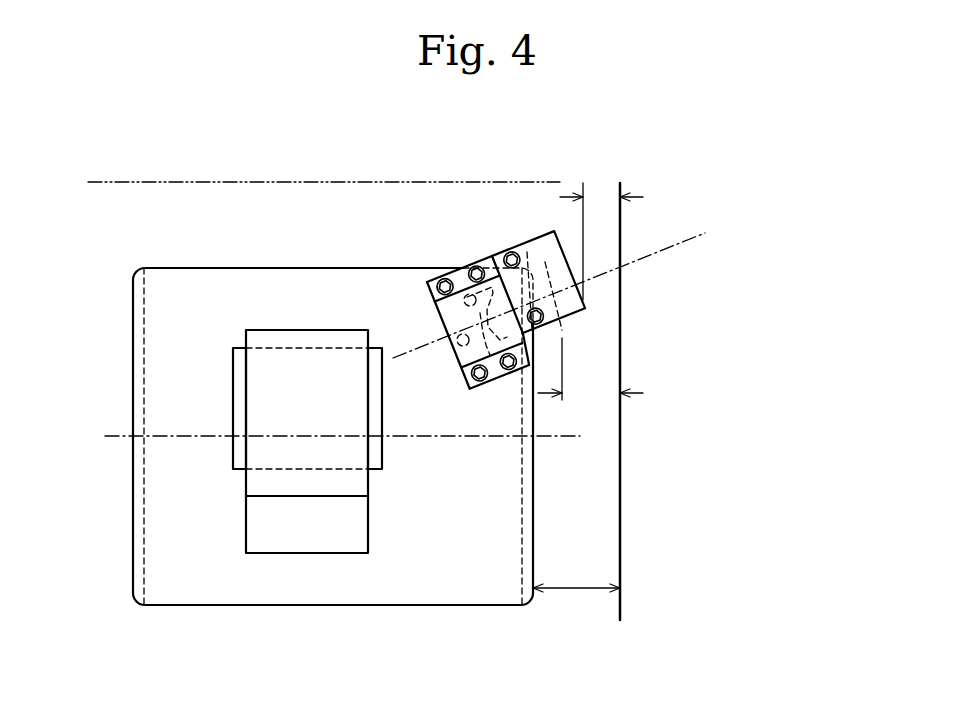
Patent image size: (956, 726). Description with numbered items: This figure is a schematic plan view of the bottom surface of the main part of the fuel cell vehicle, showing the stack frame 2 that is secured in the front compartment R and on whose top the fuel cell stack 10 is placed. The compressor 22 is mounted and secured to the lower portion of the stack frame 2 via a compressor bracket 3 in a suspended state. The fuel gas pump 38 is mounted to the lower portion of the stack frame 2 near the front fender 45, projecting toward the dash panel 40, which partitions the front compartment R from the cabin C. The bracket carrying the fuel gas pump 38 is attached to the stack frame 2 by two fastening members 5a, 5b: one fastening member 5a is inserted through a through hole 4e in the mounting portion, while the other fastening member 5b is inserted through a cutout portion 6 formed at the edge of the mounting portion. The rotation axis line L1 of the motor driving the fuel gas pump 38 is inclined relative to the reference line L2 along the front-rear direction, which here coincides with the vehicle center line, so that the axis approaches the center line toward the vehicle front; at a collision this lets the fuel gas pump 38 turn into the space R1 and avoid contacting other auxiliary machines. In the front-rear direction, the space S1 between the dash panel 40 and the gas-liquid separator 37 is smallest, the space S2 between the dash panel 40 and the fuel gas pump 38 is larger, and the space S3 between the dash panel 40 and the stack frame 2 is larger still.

The stack frame 2 is at (252, 293).
The compressor bracket 3 is at (236, 448).
The through hole 4e is at (463, 346).
The fastening member 5a is at (460, 357).
The fastening member 5b is at (455, 298).
The cutout portion 6 is at (487, 322).
The fuel cell stack 10 is at (147, 313).
The compressor 22 is at (325, 538).
The gas-liquid separator 37 is at (537, 241).
The fuel gas pump 38 is at (558, 323).
The dash panel 40 is at (624, 498).
The front fender 45 is at (345, 182).
The rotation axis line L1 is at (673, 245).
The reference line L2 is at (438, 440).
The space R1 is at (500, 231).
The space S1 is at (600, 197).
The space S2 is at (590, 369).
The space S3 is at (576, 574).
The front compartment R is at (114, 257).
The cabin C is at (717, 663).